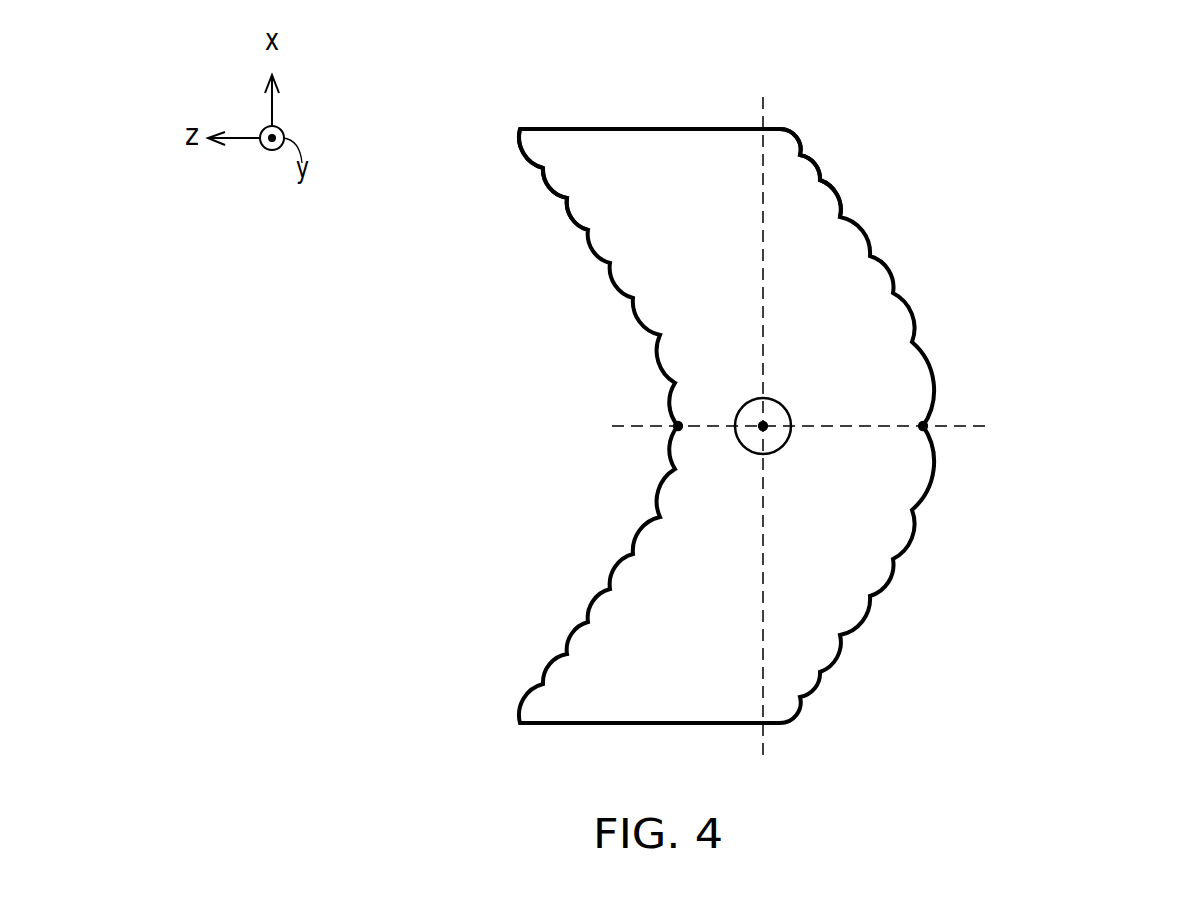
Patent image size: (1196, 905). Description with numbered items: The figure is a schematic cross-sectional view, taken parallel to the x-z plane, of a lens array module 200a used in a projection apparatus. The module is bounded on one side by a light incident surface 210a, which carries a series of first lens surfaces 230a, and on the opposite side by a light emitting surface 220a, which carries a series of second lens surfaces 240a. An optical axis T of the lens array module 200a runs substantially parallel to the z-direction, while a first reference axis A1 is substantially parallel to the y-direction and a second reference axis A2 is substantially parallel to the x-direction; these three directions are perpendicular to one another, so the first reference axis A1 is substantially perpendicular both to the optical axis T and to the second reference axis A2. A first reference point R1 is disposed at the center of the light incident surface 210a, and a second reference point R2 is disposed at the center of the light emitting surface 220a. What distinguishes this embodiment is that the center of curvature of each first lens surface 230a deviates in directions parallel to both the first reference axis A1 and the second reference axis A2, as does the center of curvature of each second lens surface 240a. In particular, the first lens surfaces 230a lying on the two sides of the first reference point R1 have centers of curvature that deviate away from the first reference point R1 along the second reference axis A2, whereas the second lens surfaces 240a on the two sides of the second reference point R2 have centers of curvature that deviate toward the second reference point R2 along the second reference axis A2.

The lens array module 200a is at (1170, 766).
The light incident surface 210a is at (528, 153).
The light emitting surface 220a is at (793, 138).
The first lens surfaces 230a is at (569, 229).
The second lens surfaces 240a is at (818, 168).
The first reference axis A1 is at (785, 407).
The second reference axis A2 is at (763, 97).
The first reference point R1 is at (677, 428).
The second reference point R2 is at (925, 430).
The optical axis T is at (622, 427).